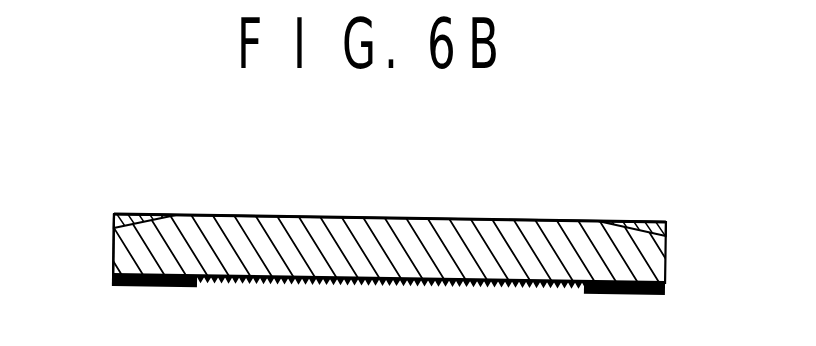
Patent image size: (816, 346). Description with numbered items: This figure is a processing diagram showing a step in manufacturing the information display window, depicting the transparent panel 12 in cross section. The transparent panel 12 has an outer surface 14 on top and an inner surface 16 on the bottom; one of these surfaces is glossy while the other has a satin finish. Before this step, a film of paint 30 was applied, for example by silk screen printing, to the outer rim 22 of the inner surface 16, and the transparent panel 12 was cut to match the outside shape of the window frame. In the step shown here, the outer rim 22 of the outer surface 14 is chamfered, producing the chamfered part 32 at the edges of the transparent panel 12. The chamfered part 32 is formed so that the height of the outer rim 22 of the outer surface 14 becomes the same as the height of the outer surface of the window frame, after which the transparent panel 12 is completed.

The transparent panel 12 is at (553, 238).
The outer surface 14 is at (290, 216).
The inner surface 16 is at (372, 283).
The outer rim 22 is at (156, 212).
The film of paint 30 is at (168, 287).
The chamfered part 32 is at (113, 228).